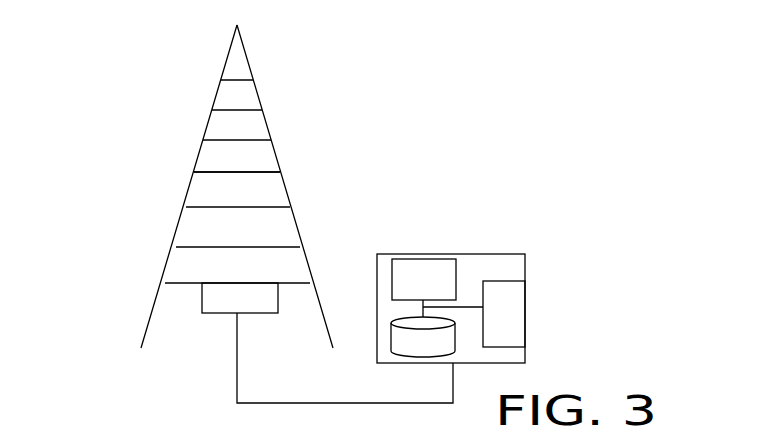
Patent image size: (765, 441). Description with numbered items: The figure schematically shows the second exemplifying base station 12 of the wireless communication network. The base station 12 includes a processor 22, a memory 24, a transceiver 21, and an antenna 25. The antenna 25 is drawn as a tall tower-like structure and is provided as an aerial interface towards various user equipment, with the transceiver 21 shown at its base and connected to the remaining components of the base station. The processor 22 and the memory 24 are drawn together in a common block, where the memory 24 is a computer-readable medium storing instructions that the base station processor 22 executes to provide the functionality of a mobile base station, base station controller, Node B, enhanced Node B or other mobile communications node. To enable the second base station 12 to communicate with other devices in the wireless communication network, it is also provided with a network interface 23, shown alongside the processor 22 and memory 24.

The second base station 12 is at (158, 80).
The transceiver 21 is at (203, 308).
The processor 22 is at (433, 263).
The network interface 23 is at (498, 292).
The memory 24 is at (440, 348).
The antenna 25 is at (280, 178).